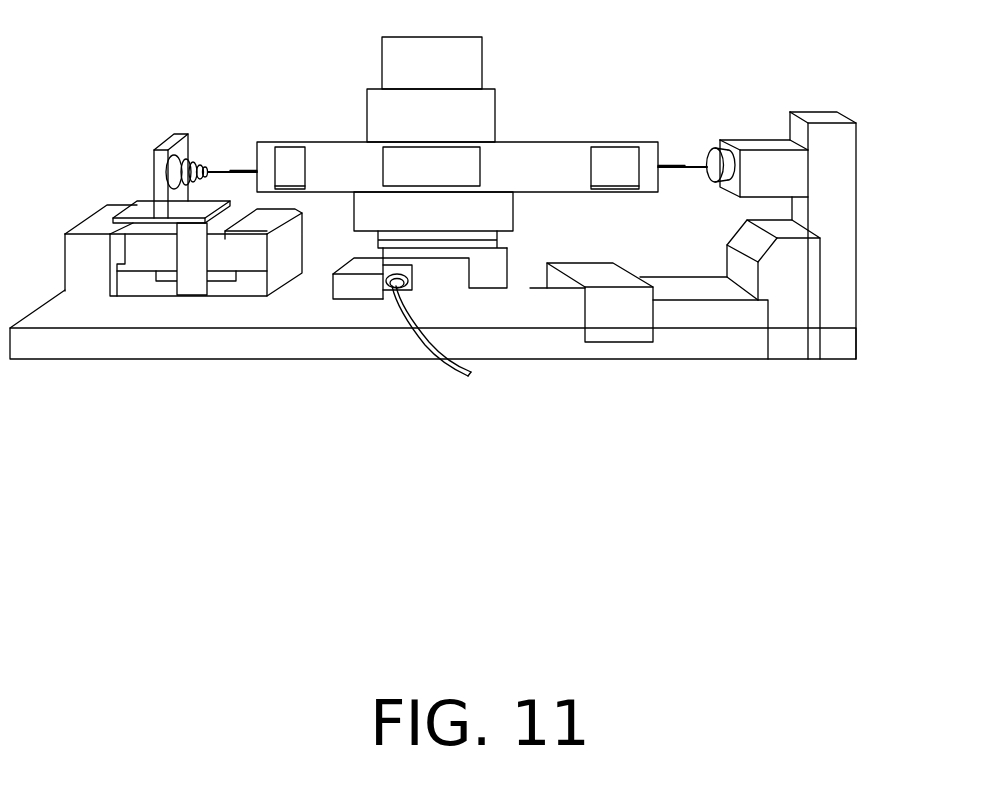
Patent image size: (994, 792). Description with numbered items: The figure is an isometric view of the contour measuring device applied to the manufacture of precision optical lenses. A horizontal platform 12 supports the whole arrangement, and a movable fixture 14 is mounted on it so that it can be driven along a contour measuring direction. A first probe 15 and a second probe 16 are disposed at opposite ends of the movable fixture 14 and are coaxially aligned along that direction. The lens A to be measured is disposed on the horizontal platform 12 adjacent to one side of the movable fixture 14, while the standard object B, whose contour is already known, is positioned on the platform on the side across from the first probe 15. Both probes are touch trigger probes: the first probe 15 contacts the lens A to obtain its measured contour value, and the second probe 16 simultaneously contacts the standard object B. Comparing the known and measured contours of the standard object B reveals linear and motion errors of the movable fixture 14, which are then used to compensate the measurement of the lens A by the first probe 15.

The horizontal platform 12 is at (183, 317).
The movable fixture 14 is at (444, 243).
The first probe 15 is at (282, 167).
The second probe 16 is at (620, 163).
The object to be measured A is at (192, 165).
The standard object B is at (723, 147).